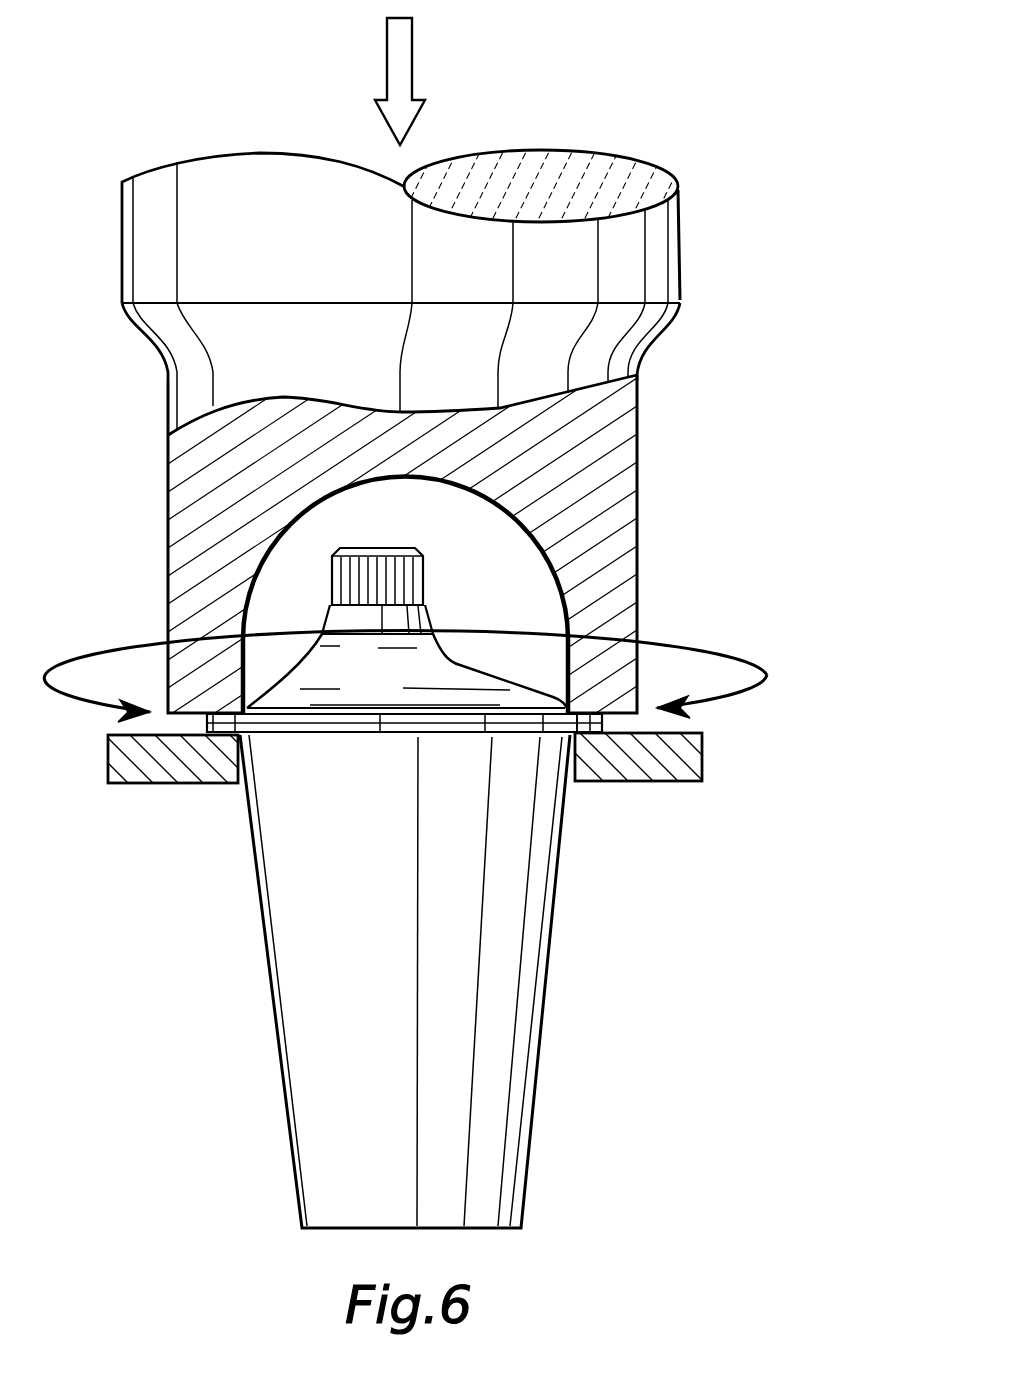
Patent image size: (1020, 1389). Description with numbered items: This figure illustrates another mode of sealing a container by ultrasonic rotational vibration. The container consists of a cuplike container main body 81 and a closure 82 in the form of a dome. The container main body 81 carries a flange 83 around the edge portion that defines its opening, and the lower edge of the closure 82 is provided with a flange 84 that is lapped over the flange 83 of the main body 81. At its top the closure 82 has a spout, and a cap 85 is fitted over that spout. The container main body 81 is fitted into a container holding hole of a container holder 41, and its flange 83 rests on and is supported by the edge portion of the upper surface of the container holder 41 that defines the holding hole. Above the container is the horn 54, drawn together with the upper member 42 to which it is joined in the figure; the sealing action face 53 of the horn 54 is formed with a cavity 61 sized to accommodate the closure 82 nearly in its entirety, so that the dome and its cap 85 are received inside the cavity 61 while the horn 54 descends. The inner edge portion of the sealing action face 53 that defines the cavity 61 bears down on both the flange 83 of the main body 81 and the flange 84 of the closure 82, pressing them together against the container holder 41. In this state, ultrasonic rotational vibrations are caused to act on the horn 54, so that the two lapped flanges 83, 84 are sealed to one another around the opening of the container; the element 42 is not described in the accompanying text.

The upper press member 42 is at (712, 263).
The horn 54 is at (625, 546).
The cavity 61 is at (262, 572).
The cap 85 is at (377, 552).
The container main body 81 is at (533, 970).
The closure 82 is at (461, 675).
The flange of the closure 84 is at (585, 710).
The sealing action face 53 is at (183, 718).
The container holder 41 is at (135, 760).
The flange of the container main body 83 is at (597, 745).